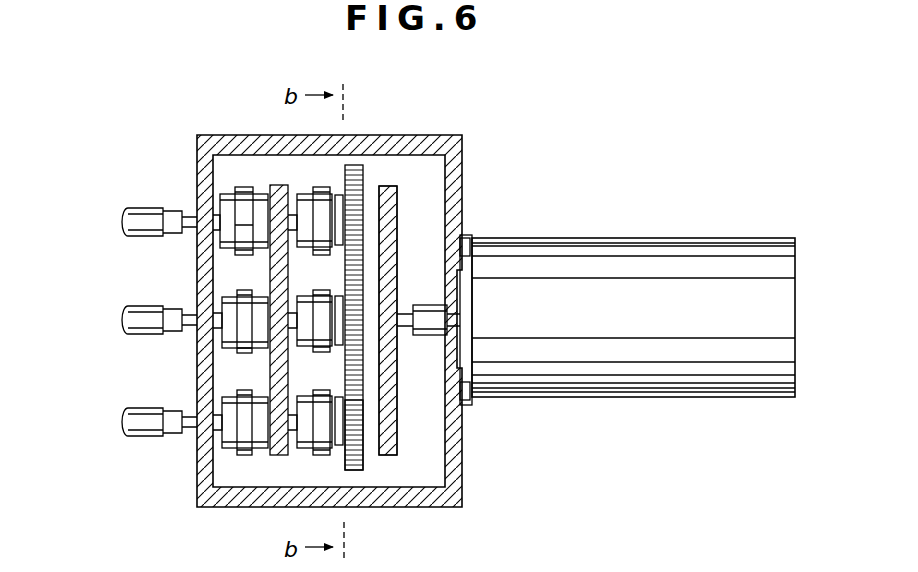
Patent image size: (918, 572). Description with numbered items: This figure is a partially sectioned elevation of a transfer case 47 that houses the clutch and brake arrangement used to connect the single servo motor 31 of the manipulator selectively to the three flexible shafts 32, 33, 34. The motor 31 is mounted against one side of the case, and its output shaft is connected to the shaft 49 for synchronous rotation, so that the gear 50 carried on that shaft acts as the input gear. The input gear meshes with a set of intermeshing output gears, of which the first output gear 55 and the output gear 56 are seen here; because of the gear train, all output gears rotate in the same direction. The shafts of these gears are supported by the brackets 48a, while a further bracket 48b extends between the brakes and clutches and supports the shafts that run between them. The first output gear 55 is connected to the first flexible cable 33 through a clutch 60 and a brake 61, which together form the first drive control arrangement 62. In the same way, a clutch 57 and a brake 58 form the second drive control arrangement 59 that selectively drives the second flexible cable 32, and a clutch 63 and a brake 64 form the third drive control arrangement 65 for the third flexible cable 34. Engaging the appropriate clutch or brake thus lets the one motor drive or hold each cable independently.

The servo motor 31 is at (556, 401).
The flexible shaft 32 is at (146, 316).
The flexible shaft 33 is at (146, 214).
The flexible shaft 34 is at (158, 417).
The transfer case 47 is at (412, 508).
The bracket 48a is at (387, 297).
The bracket 48b is at (278, 442).
The shaft 49 is at (405, 336).
The input gear 50 is at (395, 268).
The first output gear 55 is at (360, 178).
The output gear 56 is at (365, 455).
The clutch 57 is at (308, 352).
The brake 58 is at (243, 348).
The second drive control arrangement 59 is at (228, 283).
The clutch 60 is at (322, 190).
The brake 61 is at (243, 192).
The first drive control arrangement 62 is at (230, 185).
The clutch 63 is at (322, 455).
The brake 64 is at (243, 437).
The third drive control arrangement 65 is at (237, 455).